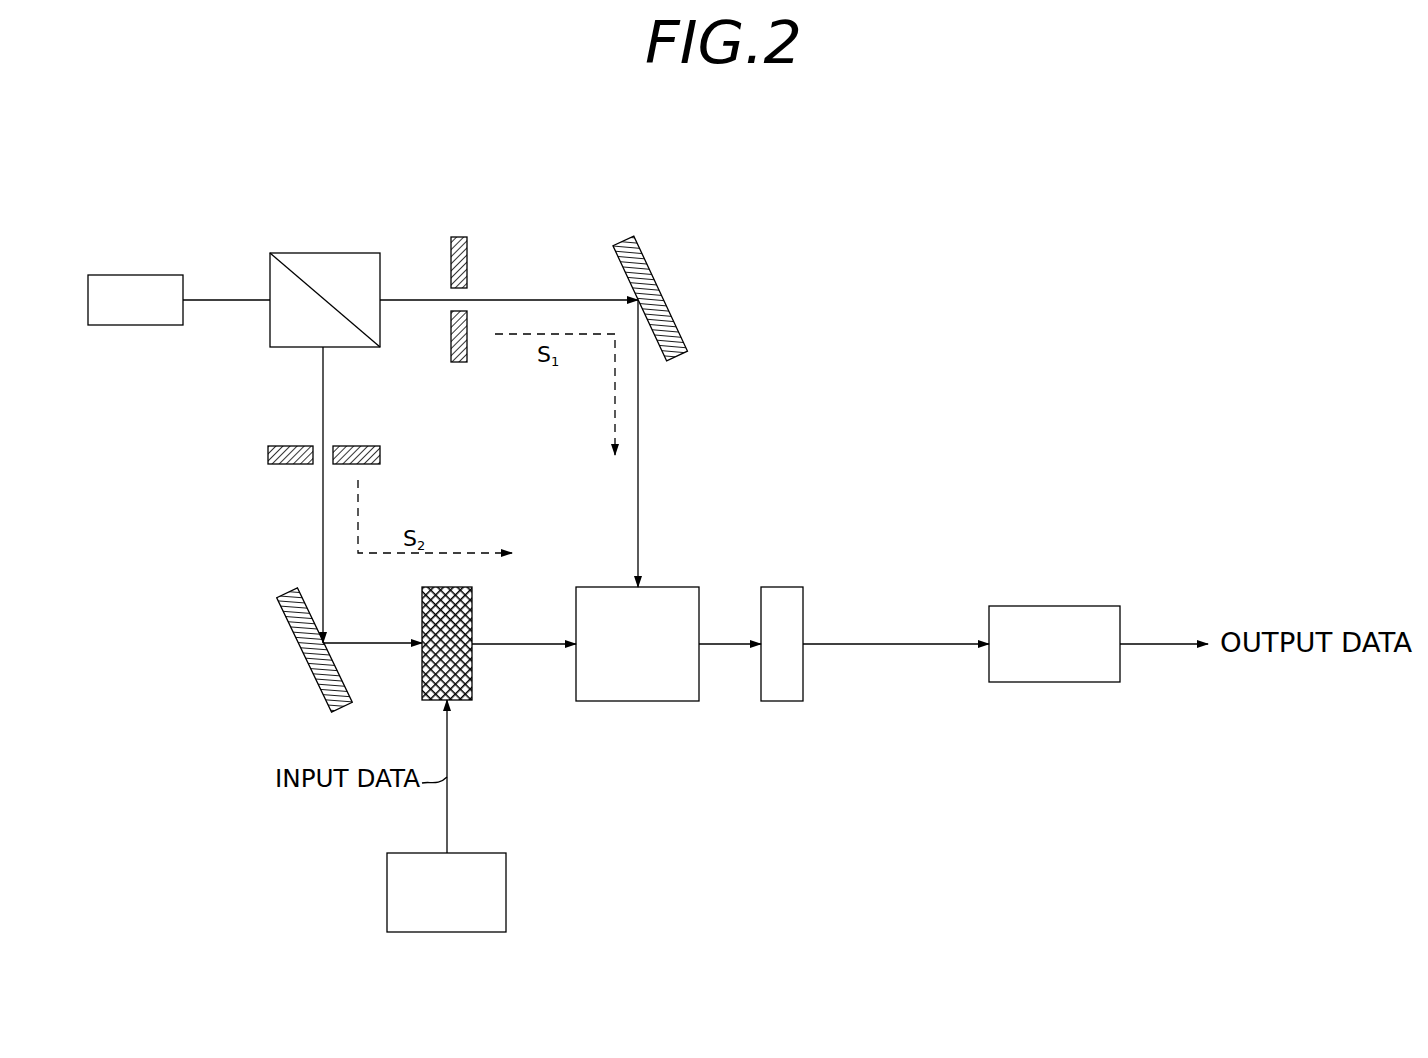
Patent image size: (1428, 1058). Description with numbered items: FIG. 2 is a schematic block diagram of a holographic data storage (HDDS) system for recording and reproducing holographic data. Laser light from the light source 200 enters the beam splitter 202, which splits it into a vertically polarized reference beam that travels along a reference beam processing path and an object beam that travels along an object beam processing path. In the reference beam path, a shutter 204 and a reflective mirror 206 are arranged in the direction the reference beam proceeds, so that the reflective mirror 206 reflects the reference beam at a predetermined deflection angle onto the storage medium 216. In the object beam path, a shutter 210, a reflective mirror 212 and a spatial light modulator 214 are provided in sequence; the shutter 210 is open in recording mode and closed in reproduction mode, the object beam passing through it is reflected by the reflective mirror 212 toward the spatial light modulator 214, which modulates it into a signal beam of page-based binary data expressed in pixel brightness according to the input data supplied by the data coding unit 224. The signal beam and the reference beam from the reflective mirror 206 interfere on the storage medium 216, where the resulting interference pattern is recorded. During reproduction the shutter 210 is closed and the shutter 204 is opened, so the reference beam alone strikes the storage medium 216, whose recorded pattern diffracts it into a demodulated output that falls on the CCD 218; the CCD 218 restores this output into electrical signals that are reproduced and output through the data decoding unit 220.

The light source 200 is at (160, 275).
The beam splitter 202 is at (357, 253).
The shutter 204 is at (485, 228).
The reflective mirror 206 is at (624, 237).
The shutter 210 is at (360, 446).
The reflective mirror 212 is at (300, 660).
The spatial light modulator 214 is at (473, 598).
The storage medium 216 is at (690, 587).
The CCD 218 is at (794, 587).
The data decoding unit 220 is at (1090, 606).
The data coding unit 224 is at (506, 888).